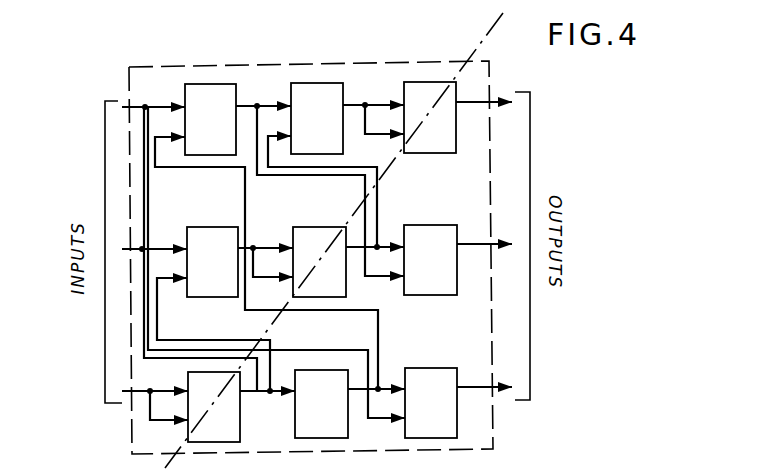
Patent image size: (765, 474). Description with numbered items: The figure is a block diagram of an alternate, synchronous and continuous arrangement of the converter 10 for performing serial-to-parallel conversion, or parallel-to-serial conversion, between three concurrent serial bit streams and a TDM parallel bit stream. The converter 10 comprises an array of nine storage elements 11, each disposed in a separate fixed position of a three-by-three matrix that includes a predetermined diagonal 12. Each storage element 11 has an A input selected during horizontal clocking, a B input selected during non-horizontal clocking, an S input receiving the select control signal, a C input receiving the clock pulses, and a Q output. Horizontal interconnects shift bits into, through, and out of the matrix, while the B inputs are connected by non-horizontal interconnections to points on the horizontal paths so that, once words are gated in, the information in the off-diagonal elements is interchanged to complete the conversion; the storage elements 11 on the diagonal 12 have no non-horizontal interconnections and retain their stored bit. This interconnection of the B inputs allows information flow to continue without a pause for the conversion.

The converter 10 is at (128, 94).
The storage element 11 is at (297, 255).
The diagonal 12 is at (482, 44).